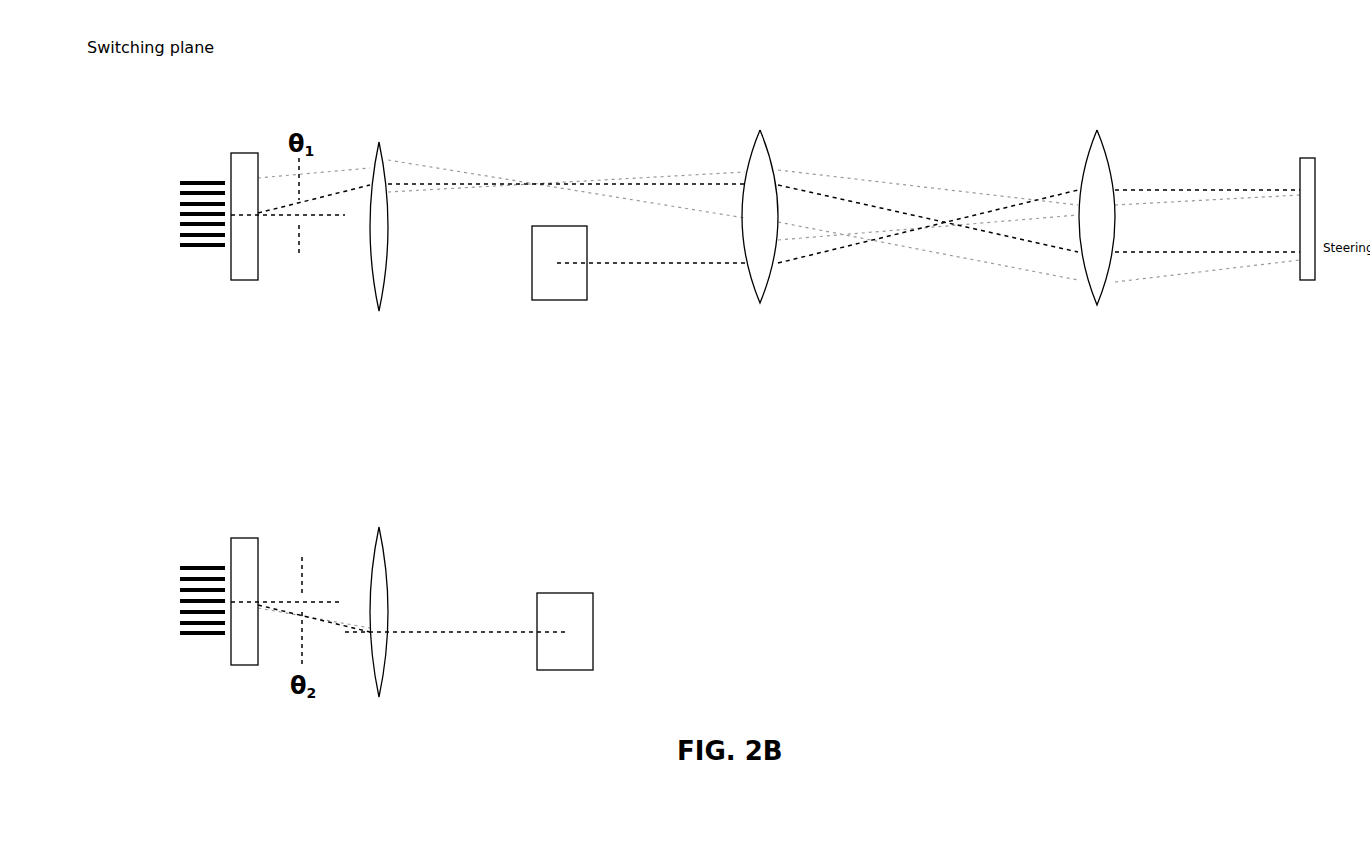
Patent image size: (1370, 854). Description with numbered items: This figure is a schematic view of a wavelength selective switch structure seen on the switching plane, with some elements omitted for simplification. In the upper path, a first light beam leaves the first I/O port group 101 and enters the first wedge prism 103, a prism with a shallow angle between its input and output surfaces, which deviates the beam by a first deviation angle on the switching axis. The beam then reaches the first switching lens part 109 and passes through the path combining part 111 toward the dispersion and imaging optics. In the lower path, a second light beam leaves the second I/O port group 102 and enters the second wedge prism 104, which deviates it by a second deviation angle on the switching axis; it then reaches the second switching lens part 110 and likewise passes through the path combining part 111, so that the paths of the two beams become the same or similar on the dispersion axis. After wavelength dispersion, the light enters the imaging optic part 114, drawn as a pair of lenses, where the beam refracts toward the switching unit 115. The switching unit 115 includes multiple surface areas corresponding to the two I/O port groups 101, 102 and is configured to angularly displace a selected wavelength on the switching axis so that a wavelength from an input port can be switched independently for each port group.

The first I/O port group 101 is at (177, 243).
The second I/O port group 102 is at (177, 630).
The first wedge prism 103 is at (243, 153).
The second wedge prism 104 is at (243, 538).
The first switching lens part 109 is at (373, 142).
The second switching lens part 110 is at (382, 527).
The path combining part 111 is at (560, 228).
The imaging optic part 114 is at (1080, 153).
The switching unit 115 is at (1313, 158).